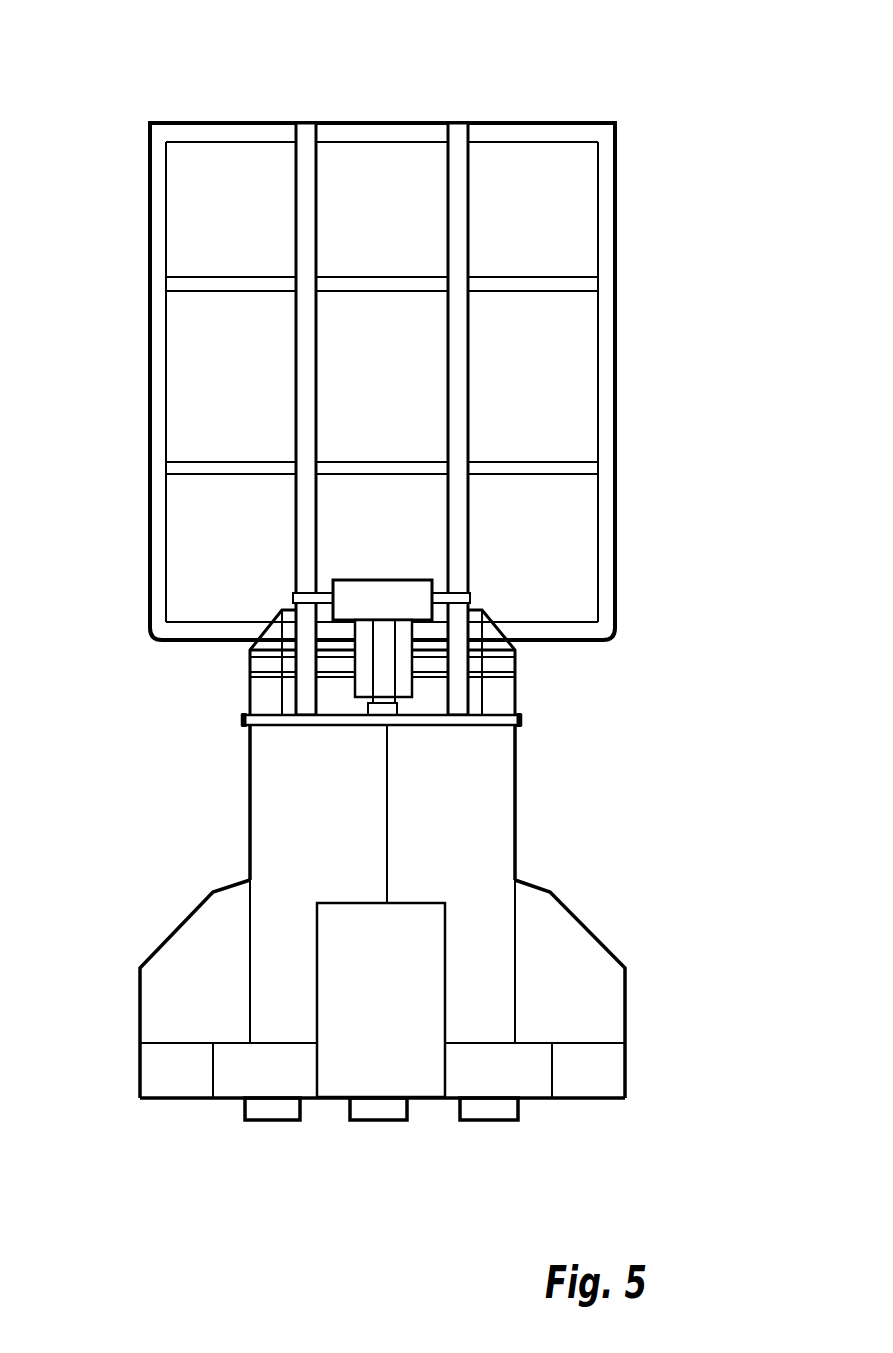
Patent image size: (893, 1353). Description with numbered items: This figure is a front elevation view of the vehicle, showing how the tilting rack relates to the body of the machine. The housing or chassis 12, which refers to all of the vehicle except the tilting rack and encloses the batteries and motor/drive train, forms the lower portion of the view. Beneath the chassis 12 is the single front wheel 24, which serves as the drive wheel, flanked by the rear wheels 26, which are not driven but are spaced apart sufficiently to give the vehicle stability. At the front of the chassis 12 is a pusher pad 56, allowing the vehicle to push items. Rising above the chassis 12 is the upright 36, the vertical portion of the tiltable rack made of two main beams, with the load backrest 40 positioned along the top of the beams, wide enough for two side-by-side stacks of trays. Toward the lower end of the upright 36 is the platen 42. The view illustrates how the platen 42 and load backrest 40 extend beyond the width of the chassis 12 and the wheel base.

The housing or chassis 12 is at (514, 797).
The front wheel 24 is at (377, 1123).
The rear wheels 26 is at (257, 1122).
The upright 36 is at (625, 317).
The load backrest 40 is at (492, 124).
The platen 42 is at (197, 960).
The pusher pad 56 is at (397, 1055).